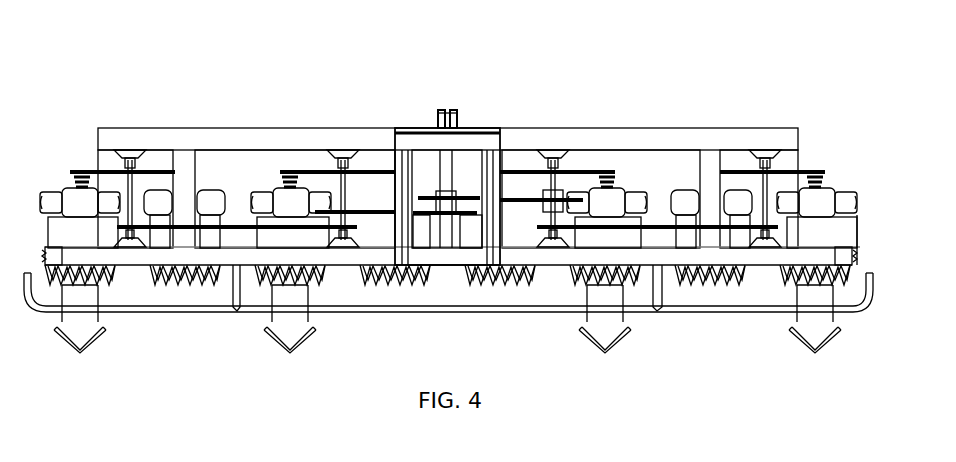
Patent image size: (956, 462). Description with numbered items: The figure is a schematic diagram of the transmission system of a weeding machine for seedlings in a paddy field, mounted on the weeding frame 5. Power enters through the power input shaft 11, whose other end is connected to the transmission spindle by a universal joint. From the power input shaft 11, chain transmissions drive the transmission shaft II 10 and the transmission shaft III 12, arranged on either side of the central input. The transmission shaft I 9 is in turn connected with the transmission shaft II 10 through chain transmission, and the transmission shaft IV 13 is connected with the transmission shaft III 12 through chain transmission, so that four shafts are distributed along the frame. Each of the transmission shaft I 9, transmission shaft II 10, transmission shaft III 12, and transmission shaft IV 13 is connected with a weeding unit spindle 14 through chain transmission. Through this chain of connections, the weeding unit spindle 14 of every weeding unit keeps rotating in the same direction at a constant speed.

The weeding frame 5 is at (448, 86).
The transmission shaft I 9 is at (153, 135).
The transmission shaft II 10 is at (367, 135).
The power input shaft 11 is at (451, 144).
The transmission shaft III 12 is at (573, 135).
The transmission shaft IV 13 is at (782, 135).
The weeding unit spindle 14 is at (840, 105).